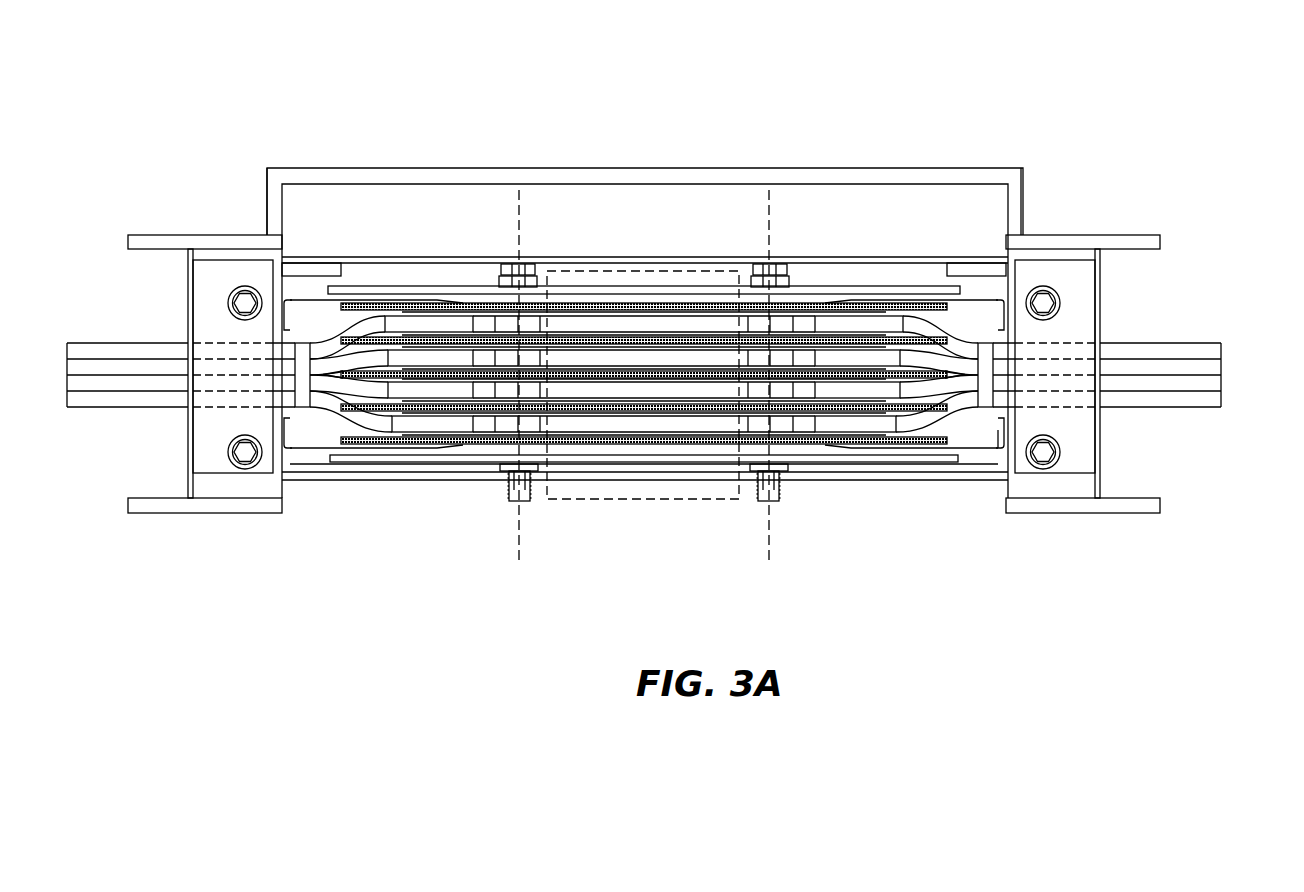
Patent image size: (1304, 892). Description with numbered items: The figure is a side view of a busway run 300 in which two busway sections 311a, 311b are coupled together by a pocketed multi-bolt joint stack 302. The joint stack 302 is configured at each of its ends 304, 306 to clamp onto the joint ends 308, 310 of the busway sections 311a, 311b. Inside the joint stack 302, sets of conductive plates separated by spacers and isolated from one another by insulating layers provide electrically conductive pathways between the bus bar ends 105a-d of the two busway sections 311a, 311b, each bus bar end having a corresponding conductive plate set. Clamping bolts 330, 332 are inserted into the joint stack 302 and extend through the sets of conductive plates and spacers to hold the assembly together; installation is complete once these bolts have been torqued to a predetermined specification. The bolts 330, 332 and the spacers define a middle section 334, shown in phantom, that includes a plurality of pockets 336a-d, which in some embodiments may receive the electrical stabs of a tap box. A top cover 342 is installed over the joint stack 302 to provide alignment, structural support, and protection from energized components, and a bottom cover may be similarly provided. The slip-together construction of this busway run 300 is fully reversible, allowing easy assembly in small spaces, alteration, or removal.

The busway run 300 is at (1068, 119).
The pocketed multi-bolt joint stack 302 is at (376, 158).
The top cover 342 is at (771, 168).
The end of joint stack 304 is at (338, 496).
The end of joint stack 306 is at (929, 494).
The joint end 308 is at (305, 466).
The joint end 310 is at (974, 469).
The busway section 311a is at (196, 234).
The busway section 311b is at (1110, 234).
The clamping bolt 330 is at (527, 264).
The clamping bolt 332 is at (756, 264).
The middle section 334 is at (704, 500).
The pockets 336a-d is at (665, 322).
The bus bar ends 105a-d is at (467, 325).